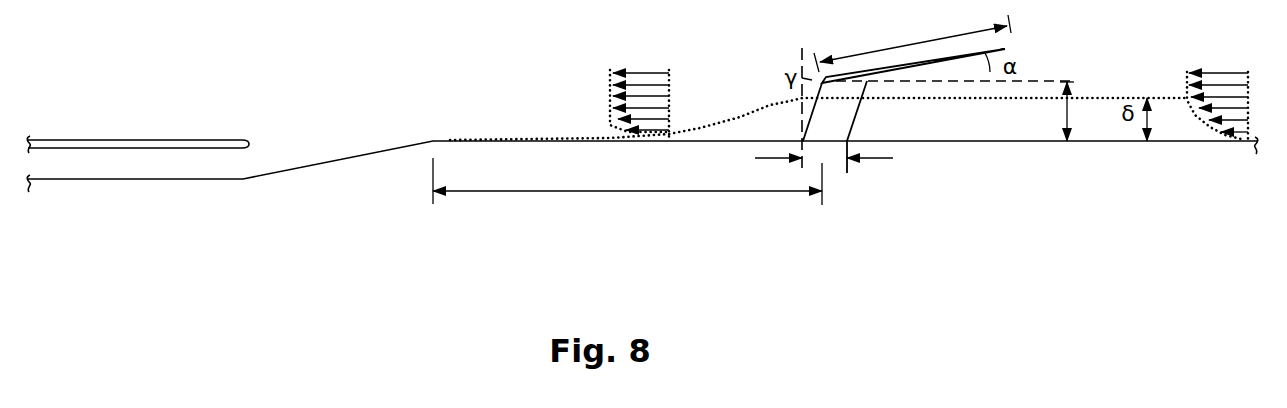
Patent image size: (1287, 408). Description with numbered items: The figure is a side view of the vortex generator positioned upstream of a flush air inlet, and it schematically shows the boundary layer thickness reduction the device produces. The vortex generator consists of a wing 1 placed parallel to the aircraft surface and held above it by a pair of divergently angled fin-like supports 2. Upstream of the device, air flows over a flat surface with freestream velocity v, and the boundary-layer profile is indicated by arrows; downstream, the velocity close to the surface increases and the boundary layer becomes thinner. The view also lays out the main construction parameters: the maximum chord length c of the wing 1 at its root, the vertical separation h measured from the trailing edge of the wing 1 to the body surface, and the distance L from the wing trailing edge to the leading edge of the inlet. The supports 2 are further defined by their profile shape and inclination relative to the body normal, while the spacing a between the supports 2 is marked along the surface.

The wing 1 is at (1003, 48).
The supports 2 is at (838, 117).
The maximum chord length c is at (912, 43).
The vertical separation from the body h is at (1057, 111).
The distance to the inlet L is at (627, 181).
The support spacing a is at (870, 176).
The freestream velocity v is at (1217, 93).